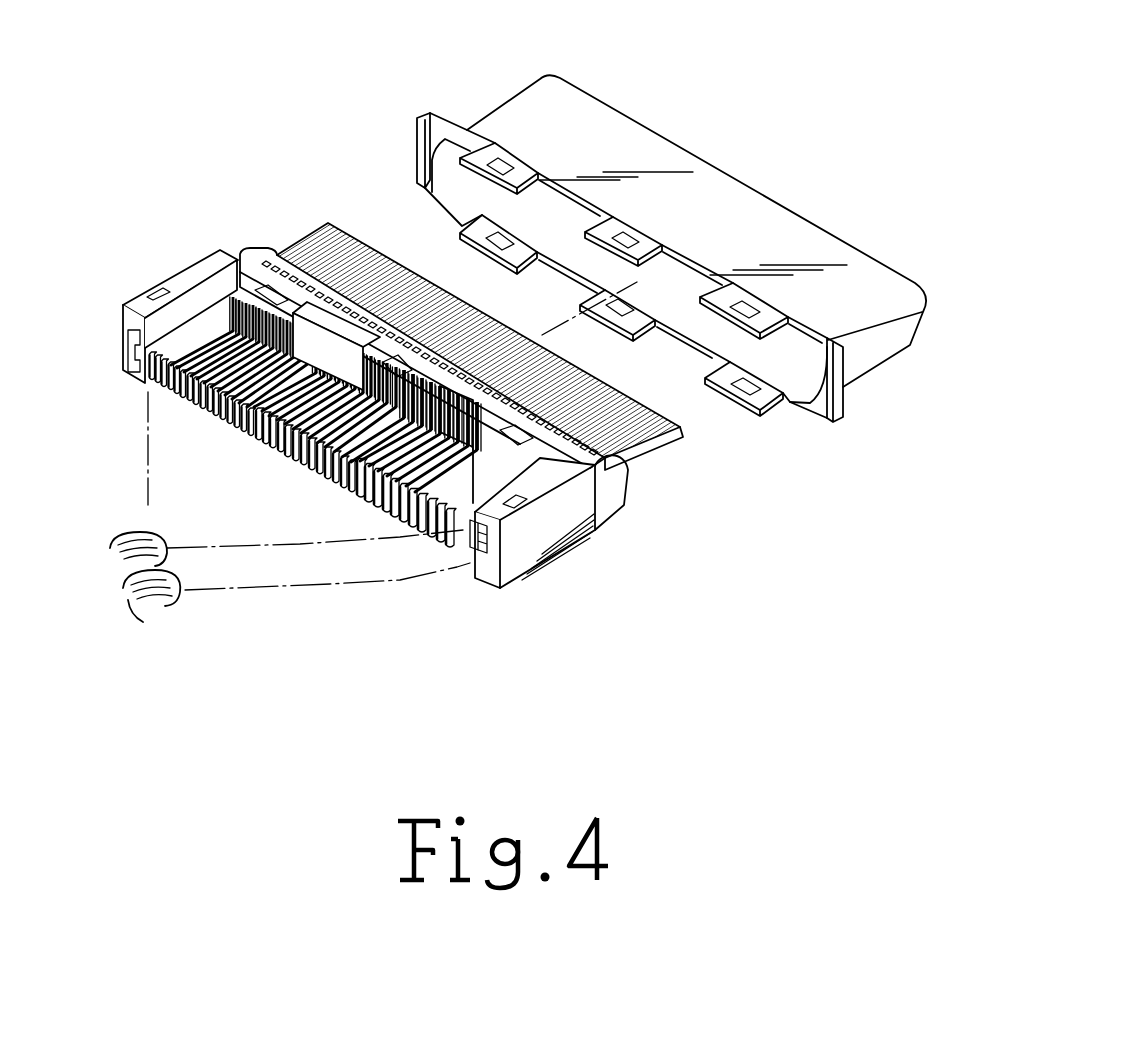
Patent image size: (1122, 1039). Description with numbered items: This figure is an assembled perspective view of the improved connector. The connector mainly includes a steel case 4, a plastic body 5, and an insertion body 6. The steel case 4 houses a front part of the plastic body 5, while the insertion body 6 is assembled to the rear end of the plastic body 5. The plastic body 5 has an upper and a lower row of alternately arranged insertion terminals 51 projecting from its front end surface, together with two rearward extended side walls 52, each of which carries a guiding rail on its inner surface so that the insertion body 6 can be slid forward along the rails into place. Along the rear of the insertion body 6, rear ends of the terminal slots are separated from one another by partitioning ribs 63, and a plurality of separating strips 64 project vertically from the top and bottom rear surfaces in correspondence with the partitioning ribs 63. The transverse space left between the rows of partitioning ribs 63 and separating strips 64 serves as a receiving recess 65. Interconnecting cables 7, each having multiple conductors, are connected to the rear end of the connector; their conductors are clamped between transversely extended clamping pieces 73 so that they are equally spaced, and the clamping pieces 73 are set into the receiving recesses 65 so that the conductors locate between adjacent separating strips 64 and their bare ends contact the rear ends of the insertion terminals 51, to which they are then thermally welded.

The steel case 4 is at (712, 178).
The plastic body 5 is at (394, 403).
The insertion terminals 51 is at (345, 258).
The side walls 52 is at (541, 550).
The insertion body 6 is at (474, 550).
The partitioning ribs 63 is at (240, 338).
The separating strips 64 is at (443, 500).
The receiving recess 65 is at (148, 342).
The interconnecting cables 7 is at (147, 465).
The clamping pieces 73 is at (181, 330).